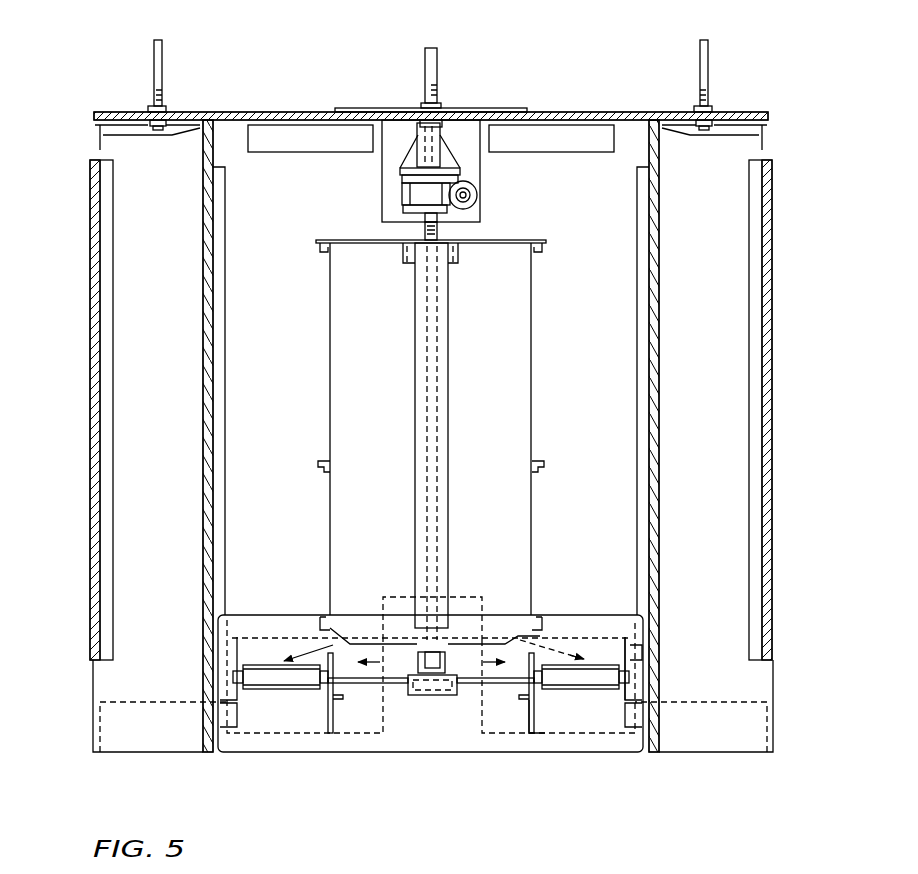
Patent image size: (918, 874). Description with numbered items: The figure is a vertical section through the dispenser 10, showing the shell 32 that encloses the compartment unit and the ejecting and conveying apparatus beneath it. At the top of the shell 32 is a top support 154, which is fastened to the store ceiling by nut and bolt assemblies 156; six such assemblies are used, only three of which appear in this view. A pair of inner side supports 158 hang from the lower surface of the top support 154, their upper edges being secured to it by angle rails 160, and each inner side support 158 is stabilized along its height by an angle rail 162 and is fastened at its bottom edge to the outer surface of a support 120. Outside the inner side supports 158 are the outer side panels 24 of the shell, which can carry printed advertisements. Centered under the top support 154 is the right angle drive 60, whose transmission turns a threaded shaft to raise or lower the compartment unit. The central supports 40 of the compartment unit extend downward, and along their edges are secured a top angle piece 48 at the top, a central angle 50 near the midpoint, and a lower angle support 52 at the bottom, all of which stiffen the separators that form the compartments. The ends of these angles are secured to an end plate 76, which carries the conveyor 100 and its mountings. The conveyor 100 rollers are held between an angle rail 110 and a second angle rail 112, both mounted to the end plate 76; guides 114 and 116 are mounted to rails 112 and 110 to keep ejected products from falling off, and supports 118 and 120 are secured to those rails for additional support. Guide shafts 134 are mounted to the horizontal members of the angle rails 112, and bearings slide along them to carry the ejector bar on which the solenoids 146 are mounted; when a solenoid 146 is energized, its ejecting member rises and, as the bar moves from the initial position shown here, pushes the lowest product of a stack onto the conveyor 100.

The dispenser 10 is at (481, 78).
The side panel 24 is at (98, 365).
The shell 32 is at (207, 110).
The central support 40 is at (520, 412).
The top angle piece 48 is at (323, 248).
The central angle 50 is at (322, 462).
The lower angle support 52 is at (325, 618).
The right angle drive 60 is at (396, 190).
The end plate 76 is at (272, 624).
The conveyor 100 is at (600, 651).
The angle rail 110 is at (232, 685).
The second angle rail 112 is at (333, 700).
The guide 114 is at (536, 657).
The guide 116 is at (633, 648).
The support 118 is at (543, 718).
The support 120 is at (228, 722).
The guide shaft 134 is at (468, 686).
The solenoid 146 is at (410, 664).
The top support 154 is at (567, 112).
The nut and bolt assembly 156 is at (151, 104).
The inner side support 158 is at (208, 366).
The angle rail 160 is at (214, 150).
The angle rail 162 is at (226, 365).